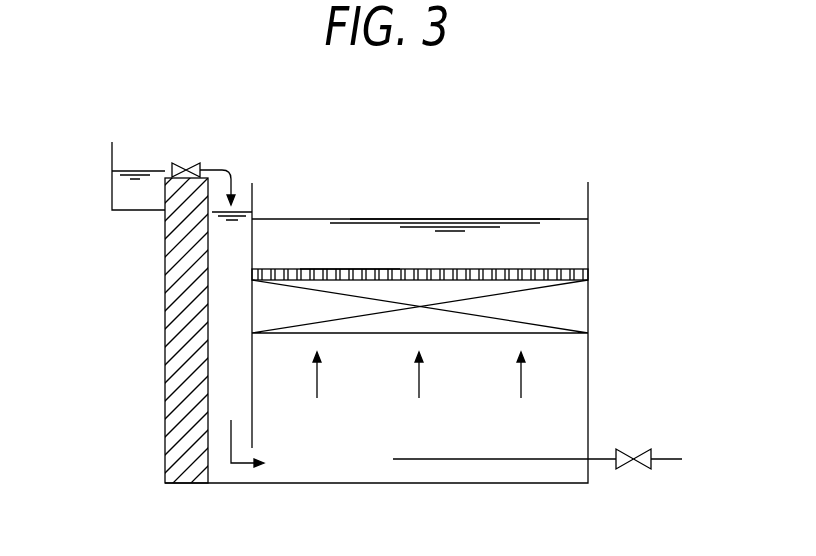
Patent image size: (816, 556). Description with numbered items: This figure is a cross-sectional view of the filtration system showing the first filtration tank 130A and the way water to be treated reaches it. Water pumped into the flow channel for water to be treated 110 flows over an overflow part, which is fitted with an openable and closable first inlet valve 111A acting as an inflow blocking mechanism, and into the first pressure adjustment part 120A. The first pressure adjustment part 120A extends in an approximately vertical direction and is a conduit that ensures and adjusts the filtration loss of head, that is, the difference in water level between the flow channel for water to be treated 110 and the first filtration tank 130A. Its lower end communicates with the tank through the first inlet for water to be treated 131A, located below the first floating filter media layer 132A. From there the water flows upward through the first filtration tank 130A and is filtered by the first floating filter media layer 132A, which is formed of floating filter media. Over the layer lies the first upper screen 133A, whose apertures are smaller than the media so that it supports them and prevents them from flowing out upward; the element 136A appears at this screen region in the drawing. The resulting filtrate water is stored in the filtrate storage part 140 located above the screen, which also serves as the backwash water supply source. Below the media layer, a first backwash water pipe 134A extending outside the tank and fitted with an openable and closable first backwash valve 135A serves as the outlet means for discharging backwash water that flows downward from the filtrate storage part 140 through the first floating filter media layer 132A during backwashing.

The flow channel for water to be treated 110 is at (133, 160).
The first inlet valve 111A is at (188, 163).
The first pressure adjustment part 120A is at (230, 327).
The first filtration tank 130A is at (340, 427).
The first inlet for water to be treated 131A is at (255, 471).
The first floating filter media layer 132A is at (558, 310).
The first upper screen 133A is at (562, 270).
The first backwash water pipe 134A is at (498, 460).
The first backwash valve 135A is at (626, 447).
The filter layer 136A is at (343, 268).
The filtrate storage part 140 is at (464, 237).